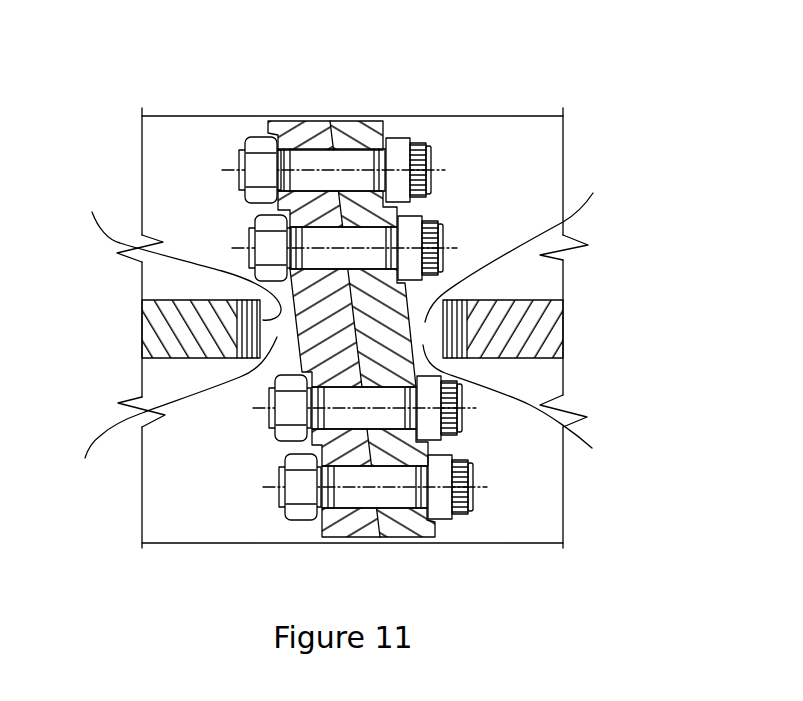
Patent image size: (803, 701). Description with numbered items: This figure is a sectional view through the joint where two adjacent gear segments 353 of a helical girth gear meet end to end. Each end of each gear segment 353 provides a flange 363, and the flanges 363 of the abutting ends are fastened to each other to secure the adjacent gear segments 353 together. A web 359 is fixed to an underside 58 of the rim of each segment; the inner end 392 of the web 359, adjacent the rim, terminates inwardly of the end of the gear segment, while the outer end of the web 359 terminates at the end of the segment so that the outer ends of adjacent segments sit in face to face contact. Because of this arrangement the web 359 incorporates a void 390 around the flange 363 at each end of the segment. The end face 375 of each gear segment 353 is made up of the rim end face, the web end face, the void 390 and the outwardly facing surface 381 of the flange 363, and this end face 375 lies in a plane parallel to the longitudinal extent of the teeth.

The underside 58 is at (183, 197).
The gear segment 353 is at (183, 145).
The web 359 is at (158, 322).
The flange 363 is at (297, 132).
The end face 375 is at (377, 508).
The outwardly facing surface 381 is at (342, 138).
The void 390 is at (345, 332).
The inner end 392 is at (352, 322).